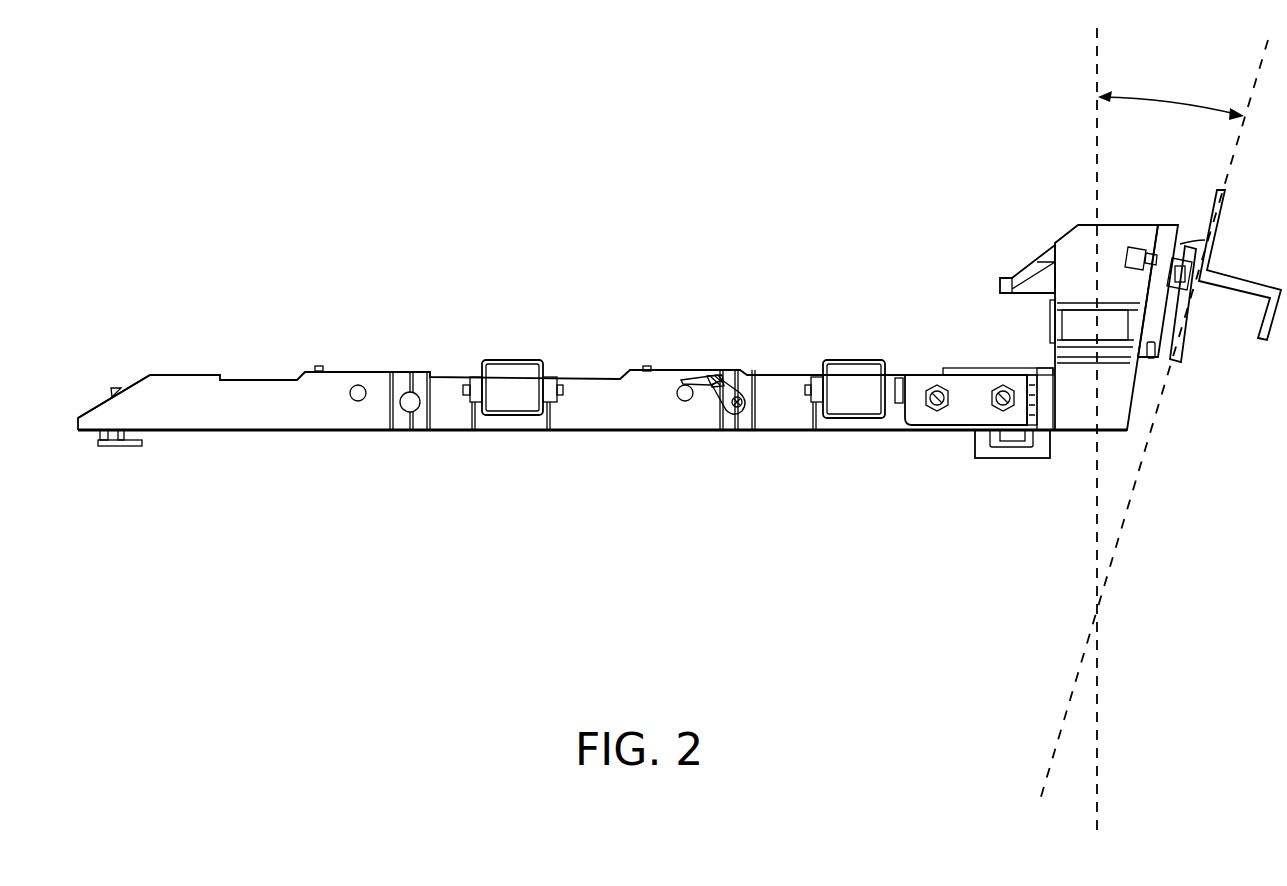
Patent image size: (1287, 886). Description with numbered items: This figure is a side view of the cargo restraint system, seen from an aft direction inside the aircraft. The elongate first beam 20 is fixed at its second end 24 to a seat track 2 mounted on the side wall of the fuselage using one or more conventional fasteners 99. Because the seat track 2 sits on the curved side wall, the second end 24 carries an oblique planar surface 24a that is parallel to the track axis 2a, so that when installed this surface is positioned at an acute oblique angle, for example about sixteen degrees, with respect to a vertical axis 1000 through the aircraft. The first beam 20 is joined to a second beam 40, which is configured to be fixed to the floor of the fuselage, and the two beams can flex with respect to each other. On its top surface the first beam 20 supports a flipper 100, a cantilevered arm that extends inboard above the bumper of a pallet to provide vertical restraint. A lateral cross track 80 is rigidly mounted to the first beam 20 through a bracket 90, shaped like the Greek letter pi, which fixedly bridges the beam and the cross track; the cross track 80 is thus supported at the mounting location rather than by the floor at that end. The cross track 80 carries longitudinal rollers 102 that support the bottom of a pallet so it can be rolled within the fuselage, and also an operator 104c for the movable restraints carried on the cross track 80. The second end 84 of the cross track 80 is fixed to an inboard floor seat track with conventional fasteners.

The seat track 2 is at (1200, 248).
The axis 2a is at (1140, 483).
The vertical axis 1000 is at (1097, 753).
The first beam 20 is at (1125, 398).
The second end 24 is at (1160, 295).
The oblique planar surface 24a is at (1137, 318).
The second beam 40 is at (1017, 455).
The cross track 80 is at (598, 413).
The second end 84 is at (148, 393).
The bracket 90 is at (982, 410).
The fasteners 99 is at (112, 393).
The flipper 100 is at (1005, 278).
The longitudinal roller 102 is at (848, 402).
The operator 104c is at (715, 372).